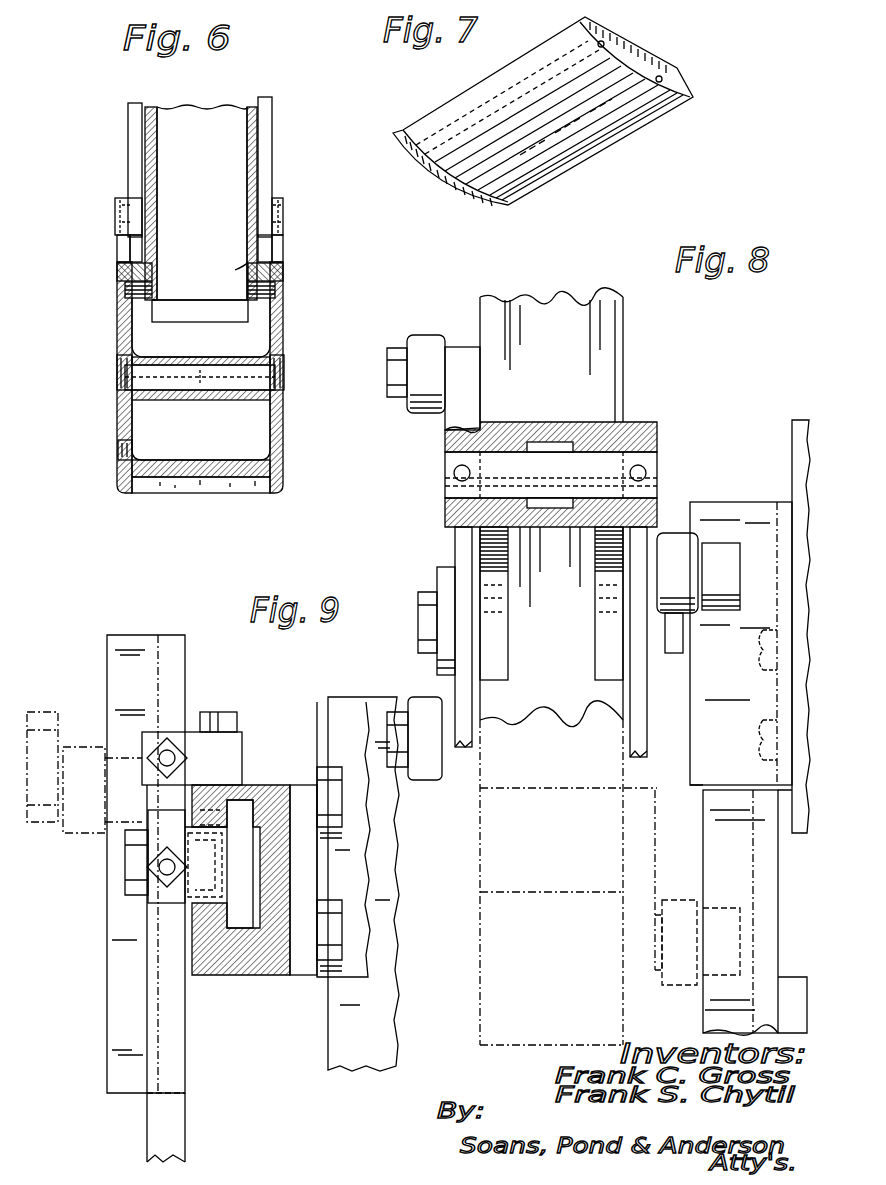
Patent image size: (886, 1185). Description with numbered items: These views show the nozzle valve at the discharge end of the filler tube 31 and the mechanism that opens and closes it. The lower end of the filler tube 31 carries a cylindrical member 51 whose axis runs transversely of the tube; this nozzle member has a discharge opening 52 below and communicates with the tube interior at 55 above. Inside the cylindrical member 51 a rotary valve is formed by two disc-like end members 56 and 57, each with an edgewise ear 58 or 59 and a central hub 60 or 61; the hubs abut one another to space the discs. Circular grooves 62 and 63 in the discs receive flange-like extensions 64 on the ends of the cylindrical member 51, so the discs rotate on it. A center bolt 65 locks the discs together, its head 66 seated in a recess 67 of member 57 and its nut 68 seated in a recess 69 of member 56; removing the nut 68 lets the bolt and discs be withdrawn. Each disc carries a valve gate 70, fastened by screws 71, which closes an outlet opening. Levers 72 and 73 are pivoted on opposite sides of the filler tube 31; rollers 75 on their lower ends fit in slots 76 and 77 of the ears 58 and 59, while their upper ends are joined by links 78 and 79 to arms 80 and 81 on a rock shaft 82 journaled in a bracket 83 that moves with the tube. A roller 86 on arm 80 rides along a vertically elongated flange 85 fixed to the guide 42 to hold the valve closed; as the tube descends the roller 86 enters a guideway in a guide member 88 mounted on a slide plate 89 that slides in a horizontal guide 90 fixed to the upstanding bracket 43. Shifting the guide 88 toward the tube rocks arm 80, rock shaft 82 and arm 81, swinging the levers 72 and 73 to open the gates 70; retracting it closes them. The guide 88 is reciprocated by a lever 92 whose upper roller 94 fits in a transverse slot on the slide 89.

In FIG. 6, the filler tube 31 is at (252, 124).
In FIG. 8, the filler tube 31 is at (621, 331).
In FIG. 8, the channeled guide 42 is at (783, 426).
In FIG. 9, the upstanding bracket 43 is at (338, 1037).
In FIG. 6, the cylindrical member 51 is at (160, 277).
In FIG. 6, the discharge opening 52 is at (218, 492).
In FIG. 6, the communication opening 55 is at (258, 270).
In FIG. 6, the disc-like end member 56 is at (117, 328).
In FIG. 6, the disc-like end member 57 is at (283, 322).
In FIG. 6, the ear 58 is at (117, 246).
In FIG. 6, the ear 59 is at (281, 242).
In FIG. 6, the hub 60 is at (182, 342).
In FIG. 6, the hub 61 is at (243, 345).
In FIG. 6, the circular groove 62 is at (127, 270).
In FIG. 6, the circular groove 63 is at (270, 272).
In FIG. 6, the flange-like extension 64 is at (125, 288).
In FIG. 6, the center bolt 65 is at (218, 390).
In FIG. 6, the head 66 is at (284, 370).
In FIG. 6, the recess 67 is at (283, 410).
In FIG. 6, the nut 68 is at (117, 383).
In FIG. 6, the recess 69 is at (120, 404).
In FIG. 6, the valve gate 70 is at (170, 470).
In FIG. 7, the valve gate 70 is at (474, 198).
In FIG. 6, the screw 71 is at (117, 465).
In FIG. 6, the lever 72 is at (128, 144).
In FIG. 6, the lever 73 is at (272, 146).
In FIG. 6, the roller 75 is at (115, 230).
In FIG. 6, the slot 76 is at (130, 255).
In FIG. 6, the slot 77 is at (272, 250).
In FIG. 8, the link 78 is at (669, 537).
In FIG. 8, the link 79 is at (422, 337).
In FIG. 8, the arm 80 is at (664, 512).
In FIG. 8, the arm 81 is at (460, 417).
In FIG. 8, the rock shaft 82 is at (552, 460).
In FIG. 8, the bracket 83 is at (593, 424).
In FIG. 8, the flange 85 is at (753, 508).
In FIG. 8, the roller 86 is at (721, 543).
In FIG. 9, the guide member 88 is at (108, 976).
In FIG. 9, the slide plate 89 is at (240, 915).
In FIG. 9, the horizontally extending guide 90 is at (255, 764).
In FIG. 9, the lever 92 is at (170, 1133).
In FIG. 9, the roller 94 is at (160, 908).